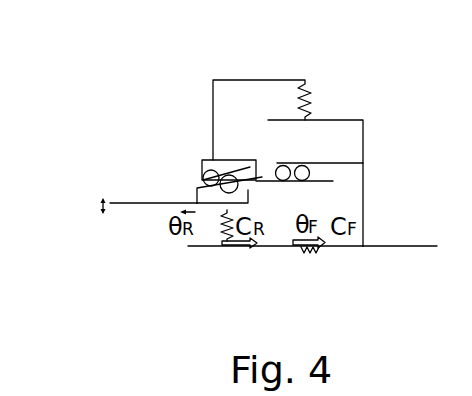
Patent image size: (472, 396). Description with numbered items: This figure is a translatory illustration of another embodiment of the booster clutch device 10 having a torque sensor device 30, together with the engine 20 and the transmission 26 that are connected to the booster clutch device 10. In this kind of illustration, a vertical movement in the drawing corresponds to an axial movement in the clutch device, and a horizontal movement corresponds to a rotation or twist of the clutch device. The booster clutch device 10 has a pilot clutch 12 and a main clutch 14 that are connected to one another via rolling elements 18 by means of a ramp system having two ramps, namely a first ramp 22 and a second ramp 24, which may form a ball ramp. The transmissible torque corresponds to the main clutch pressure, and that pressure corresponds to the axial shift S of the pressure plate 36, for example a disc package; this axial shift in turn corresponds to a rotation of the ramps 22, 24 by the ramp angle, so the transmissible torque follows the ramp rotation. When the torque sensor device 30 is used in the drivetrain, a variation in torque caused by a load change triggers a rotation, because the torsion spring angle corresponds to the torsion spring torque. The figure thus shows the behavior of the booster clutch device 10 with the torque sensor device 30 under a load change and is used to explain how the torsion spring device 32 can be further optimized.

The booster clutch device 10 is at (346, 84).
The pilot clutch 12 is at (230, 72).
The main clutch 14 is at (158, 240).
The rolling elements 18 is at (247, 179).
The engine 20 is at (178, 176).
The first ramp 22 is at (232, 160).
The second ramp 24 is at (250, 188).
The transmission 26 is at (398, 238).
The torque sensor device 30 is at (325, 260).
The torsion spring device 32 is at (362, 276).
The pressure plate 36 is at (142, 190).